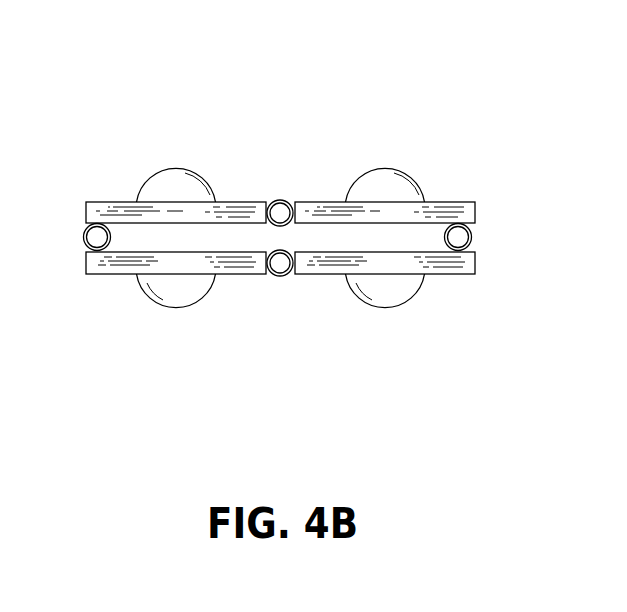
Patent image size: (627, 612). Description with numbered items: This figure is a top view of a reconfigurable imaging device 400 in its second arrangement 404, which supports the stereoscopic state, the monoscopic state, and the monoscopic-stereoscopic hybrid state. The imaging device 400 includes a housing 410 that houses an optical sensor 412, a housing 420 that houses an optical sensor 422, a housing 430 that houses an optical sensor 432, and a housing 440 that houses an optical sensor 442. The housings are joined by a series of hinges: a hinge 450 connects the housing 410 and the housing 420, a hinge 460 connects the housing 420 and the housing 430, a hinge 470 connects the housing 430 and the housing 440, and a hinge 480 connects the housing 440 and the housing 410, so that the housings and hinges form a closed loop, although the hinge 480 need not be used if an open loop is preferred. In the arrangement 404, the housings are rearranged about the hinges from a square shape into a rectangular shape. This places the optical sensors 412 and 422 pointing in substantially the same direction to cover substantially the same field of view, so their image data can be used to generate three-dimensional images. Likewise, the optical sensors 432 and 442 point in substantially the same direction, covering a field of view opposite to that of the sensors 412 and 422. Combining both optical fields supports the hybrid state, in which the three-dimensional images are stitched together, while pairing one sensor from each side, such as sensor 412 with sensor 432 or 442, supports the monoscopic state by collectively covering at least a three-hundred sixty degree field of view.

The imaging device 400 is at (424, 51).
The second arrangement 404 is at (563, 173).
The housing 410 is at (223, 212).
The optical sensor 412 is at (173, 177).
The housing 420 is at (432, 210).
The optical sensor 422 is at (383, 177).
The housing 430 is at (335, 266).
The optical sensor 432 is at (388, 295).
The housing 440 is at (130, 266).
The optical sensor 442 is at (177, 295).
The hinge 450 is at (280, 210).
The hinge 460 is at (470, 237).
The hinge 470 is at (278, 265).
The hinge 480 is at (93, 237).